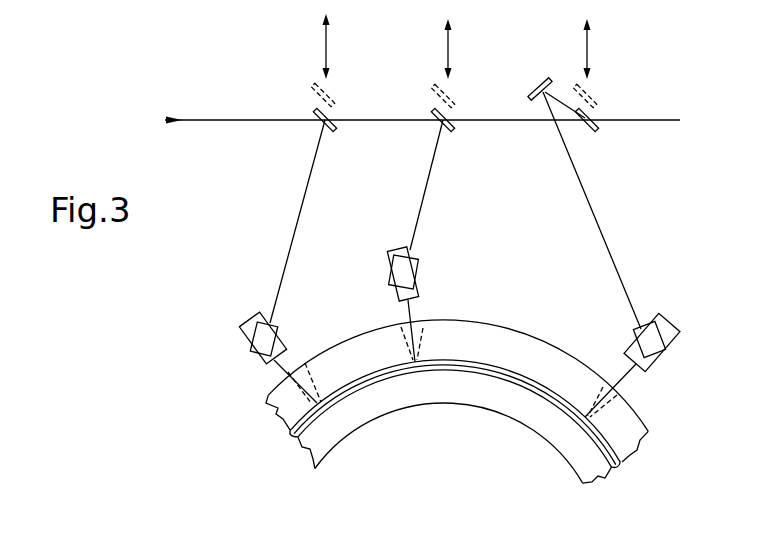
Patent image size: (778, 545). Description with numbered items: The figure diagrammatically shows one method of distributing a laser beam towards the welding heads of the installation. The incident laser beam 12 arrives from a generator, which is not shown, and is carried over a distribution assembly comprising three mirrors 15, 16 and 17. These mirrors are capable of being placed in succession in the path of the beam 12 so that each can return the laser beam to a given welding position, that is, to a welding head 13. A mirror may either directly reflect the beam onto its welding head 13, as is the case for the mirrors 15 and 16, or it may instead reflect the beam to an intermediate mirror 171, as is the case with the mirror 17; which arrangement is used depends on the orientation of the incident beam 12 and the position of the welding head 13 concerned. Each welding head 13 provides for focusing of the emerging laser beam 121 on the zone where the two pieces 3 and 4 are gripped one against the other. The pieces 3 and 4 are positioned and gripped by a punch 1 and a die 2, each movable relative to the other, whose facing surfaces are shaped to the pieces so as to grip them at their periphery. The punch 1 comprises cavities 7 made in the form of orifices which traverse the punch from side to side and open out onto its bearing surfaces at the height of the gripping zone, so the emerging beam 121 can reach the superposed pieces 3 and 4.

The punch 1 is at (547, 358).
The die 2 is at (510, 398).
The piece 3 is at (358, 382).
The piece 4 is at (447, 367).
The cavities 7 is at (405, 346).
The laser beam 12 is at (247, 119).
The emerging laser beam 121 is at (290, 420).
The welding head 13 is at (255, 343).
The mirror 15 is at (327, 125).
The mirror 16 is at (445, 127).
The mirror 17 is at (581, 129).
The intermediate mirror 171 is at (545, 82).